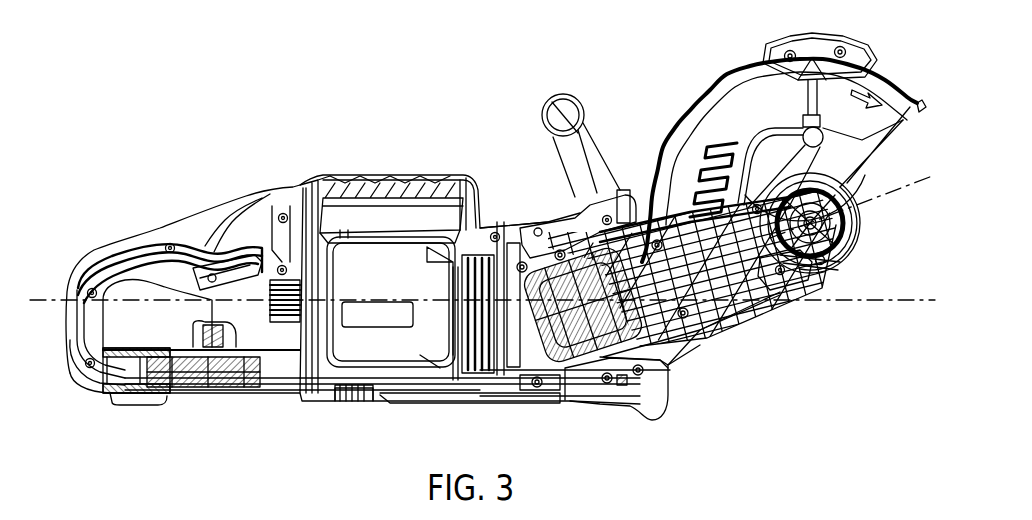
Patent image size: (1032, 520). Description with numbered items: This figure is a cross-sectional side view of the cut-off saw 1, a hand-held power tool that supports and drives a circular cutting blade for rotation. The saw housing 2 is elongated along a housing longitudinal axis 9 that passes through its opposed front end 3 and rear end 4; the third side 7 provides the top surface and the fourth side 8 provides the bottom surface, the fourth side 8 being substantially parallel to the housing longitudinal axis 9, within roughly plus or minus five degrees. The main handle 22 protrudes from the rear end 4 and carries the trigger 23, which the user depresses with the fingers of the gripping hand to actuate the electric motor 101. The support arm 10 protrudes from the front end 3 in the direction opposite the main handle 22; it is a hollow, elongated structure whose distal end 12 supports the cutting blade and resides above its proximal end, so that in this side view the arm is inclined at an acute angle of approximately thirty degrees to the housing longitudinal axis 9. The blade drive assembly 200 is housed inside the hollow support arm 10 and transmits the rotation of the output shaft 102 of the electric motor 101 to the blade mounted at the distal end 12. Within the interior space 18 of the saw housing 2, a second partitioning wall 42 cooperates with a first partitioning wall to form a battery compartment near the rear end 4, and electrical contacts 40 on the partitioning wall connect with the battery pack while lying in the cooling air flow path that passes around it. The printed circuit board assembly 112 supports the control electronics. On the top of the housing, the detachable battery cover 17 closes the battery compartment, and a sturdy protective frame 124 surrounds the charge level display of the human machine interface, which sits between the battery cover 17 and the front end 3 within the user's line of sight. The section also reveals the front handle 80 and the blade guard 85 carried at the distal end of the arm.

The cut-off saw 1 is at (300, 30).
The saw housing 2 is at (283, 188).
The front end 3 is at (693, 343).
The rear end 4 is at (213, 390).
The third side 7 is at (538, 228).
The fourth side 8 is at (317, 400).
The housing longitudinal axis 9 is at (884, 303).
The support arm 10 is at (790, 283).
The distal end 12 is at (847, 213).
The battery cover 17 is at (440, 175).
The interior space 18 is at (404, 283).
The main handle 22 is at (170, 243).
The trigger 23 is at (228, 270).
The electrical contacts 40 is at (349, 228).
The second partitioning wall 42 is at (623, 405).
The front handle 80 is at (608, 138).
The guard 85 is at (740, 103).
The electric motor 101 is at (583, 373).
The output shaft 102 is at (540, 383).
The printed circuit board assembly 112 is at (452, 402).
The protective frame 124 is at (620, 190).
The blade drive assembly 200 is at (747, 310).